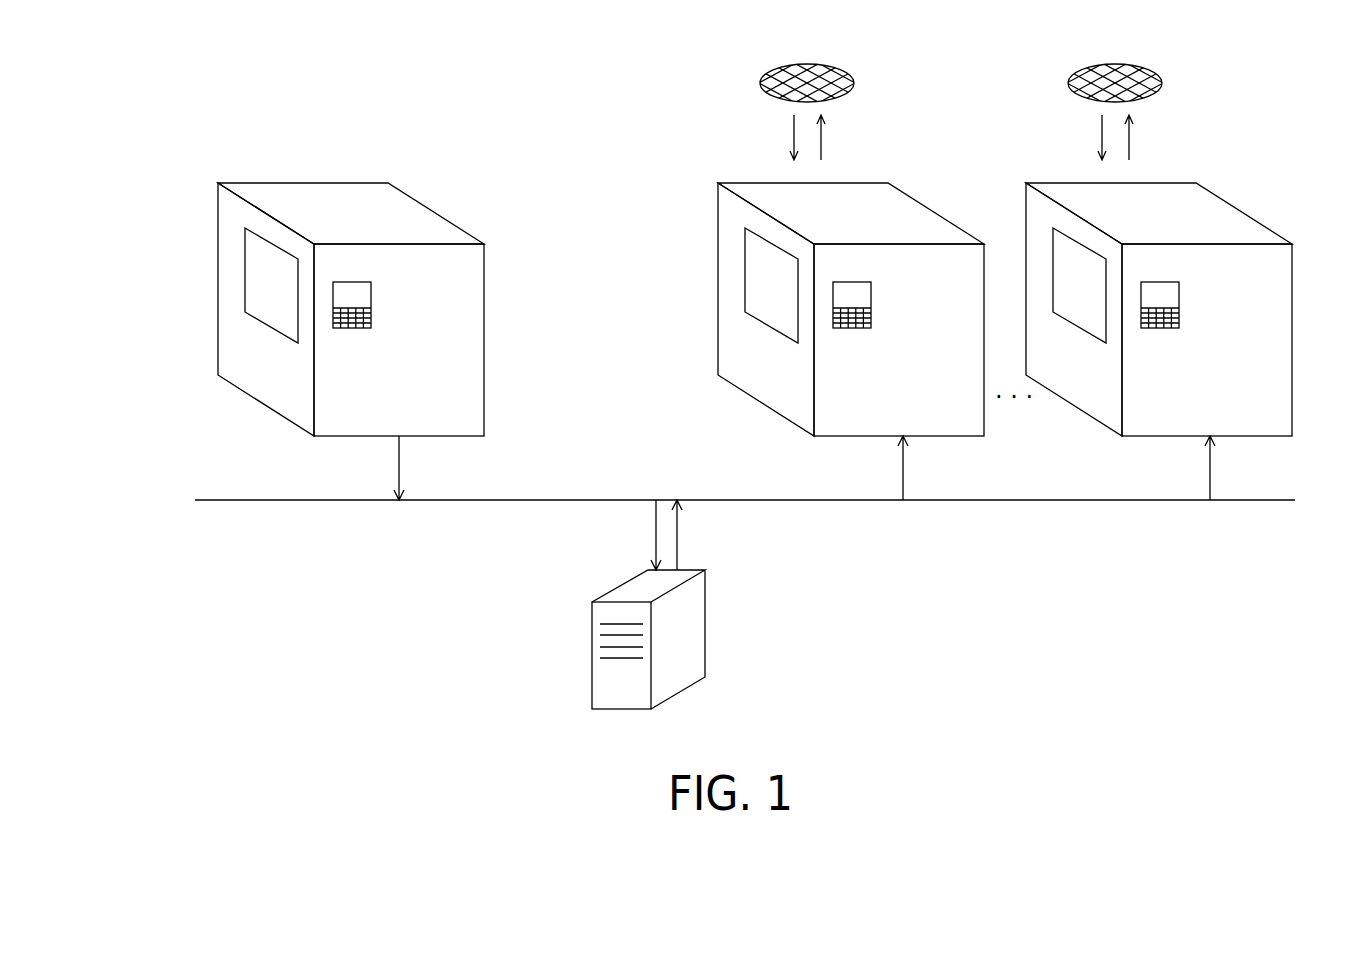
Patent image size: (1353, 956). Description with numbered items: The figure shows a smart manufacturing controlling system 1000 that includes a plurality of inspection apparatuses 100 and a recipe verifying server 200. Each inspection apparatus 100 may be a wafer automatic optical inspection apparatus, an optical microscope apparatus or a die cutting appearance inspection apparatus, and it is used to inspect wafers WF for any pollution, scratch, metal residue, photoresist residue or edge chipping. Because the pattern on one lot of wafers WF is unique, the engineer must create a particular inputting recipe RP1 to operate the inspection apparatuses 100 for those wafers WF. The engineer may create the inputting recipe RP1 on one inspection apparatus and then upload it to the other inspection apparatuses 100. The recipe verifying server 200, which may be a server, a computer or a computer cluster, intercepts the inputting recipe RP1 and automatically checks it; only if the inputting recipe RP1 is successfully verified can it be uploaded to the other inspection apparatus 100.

The smart manufacturing controlling system 1000 is at (162, 84).
The inspection apparatus 100 is at (870, 198).
The wafers WF is at (856, 83).
The inputting recipe RP1 is at (832, 503).
The recipe verifying server 200 is at (690, 630).